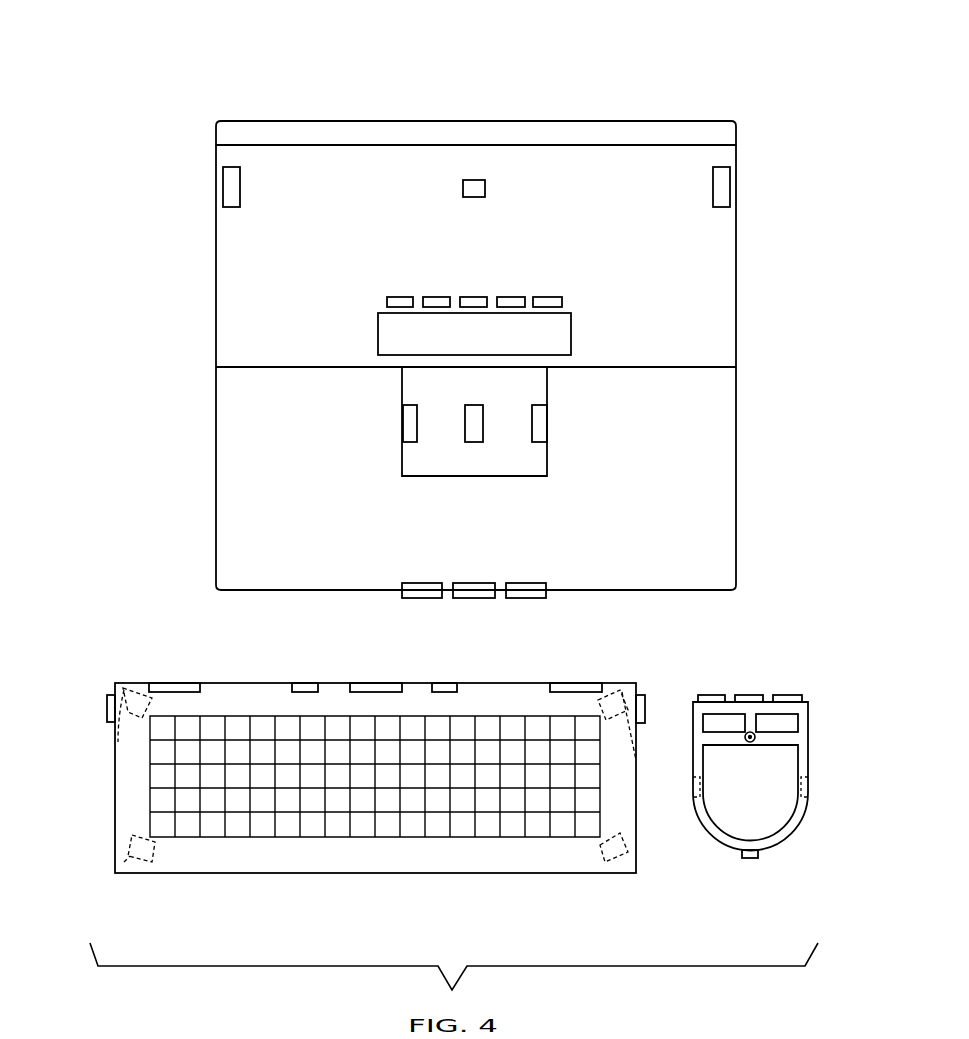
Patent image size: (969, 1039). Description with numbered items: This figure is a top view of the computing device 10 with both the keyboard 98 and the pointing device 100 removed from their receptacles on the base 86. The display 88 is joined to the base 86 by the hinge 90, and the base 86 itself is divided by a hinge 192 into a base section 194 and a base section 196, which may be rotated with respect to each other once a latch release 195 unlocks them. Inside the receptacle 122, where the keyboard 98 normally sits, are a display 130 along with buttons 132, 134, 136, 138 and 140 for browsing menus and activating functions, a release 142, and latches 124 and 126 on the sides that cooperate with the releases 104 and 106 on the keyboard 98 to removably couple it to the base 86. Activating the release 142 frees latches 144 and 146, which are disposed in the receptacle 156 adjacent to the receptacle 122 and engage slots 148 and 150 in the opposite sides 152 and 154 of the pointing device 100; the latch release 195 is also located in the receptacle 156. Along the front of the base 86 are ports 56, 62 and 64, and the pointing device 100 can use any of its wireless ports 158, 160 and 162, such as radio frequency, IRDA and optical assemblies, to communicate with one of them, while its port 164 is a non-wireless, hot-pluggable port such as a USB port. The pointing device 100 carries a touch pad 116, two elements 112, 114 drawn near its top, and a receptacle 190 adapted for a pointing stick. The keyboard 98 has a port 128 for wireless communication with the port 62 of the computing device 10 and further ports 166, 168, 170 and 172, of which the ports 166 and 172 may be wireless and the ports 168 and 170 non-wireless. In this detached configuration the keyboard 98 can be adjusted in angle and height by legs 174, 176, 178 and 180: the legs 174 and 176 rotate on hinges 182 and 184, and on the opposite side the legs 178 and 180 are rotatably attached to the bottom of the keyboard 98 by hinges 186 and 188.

The computing device 10 is at (693, 72).
The port 56 is at (420, 598).
The port 62 is at (474, 598).
The port 64 is at (525, 598).
The base 86 is at (215, 476).
The display 88 is at (737, 119).
The hinge 90 is at (215, 145).
The keyboard 98 is at (310, 873).
The pointing device 100 is at (822, 719).
The release 104 is at (107, 710).
The release 106 is at (645, 708).
The button 112 is at (703, 725).
The button 114 is at (798, 724).
The touch pad 116 is at (762, 812).
The receptacle 122 is at (238, 264).
The latch 124 is at (223, 187).
The latch 126 is at (730, 187).
The port 128 is at (375, 683).
The display 130 is at (571, 333).
The button 132 is at (402, 297).
The button 134 is at (440, 297).
The button 136 is at (471, 297).
The button 138 is at (510, 297).
The button 140 is at (546, 297).
The release 142 is at (463, 185).
The latch 144 is at (403, 418).
The latch 146 is at (547, 418).
The slot 148 is at (696, 795).
The slot 150 is at (806, 787).
The side 152 is at (700, 820).
The side 154 is at (802, 820).
The receptacle 156 is at (402, 477).
The port 158 is at (712, 695).
The port 160 is at (750, 695).
The port 162 is at (787, 695).
The port 164 is at (755, 862).
The port 166 is at (175, 683).
The port 168 is at (305, 683).
The port 170 is at (443, 683).
The port 172 is at (575, 683).
The leg 174 is at (118, 748).
The leg 176 is at (636, 762).
The leg 178 is at (124, 863).
The leg 180 is at (636, 848).
The hinge 182 is at (120, 686).
The hinge 184 is at (615, 690).
The hinge 186 is at (153, 868).
The hinge 188 is at (601, 863).
The receptacle 190 is at (750, 743).
The hinge 192 is at (215, 367).
The base section 194 is at (736, 312).
The latch release 195 is at (474, 443).
The base section 196 is at (736, 530).